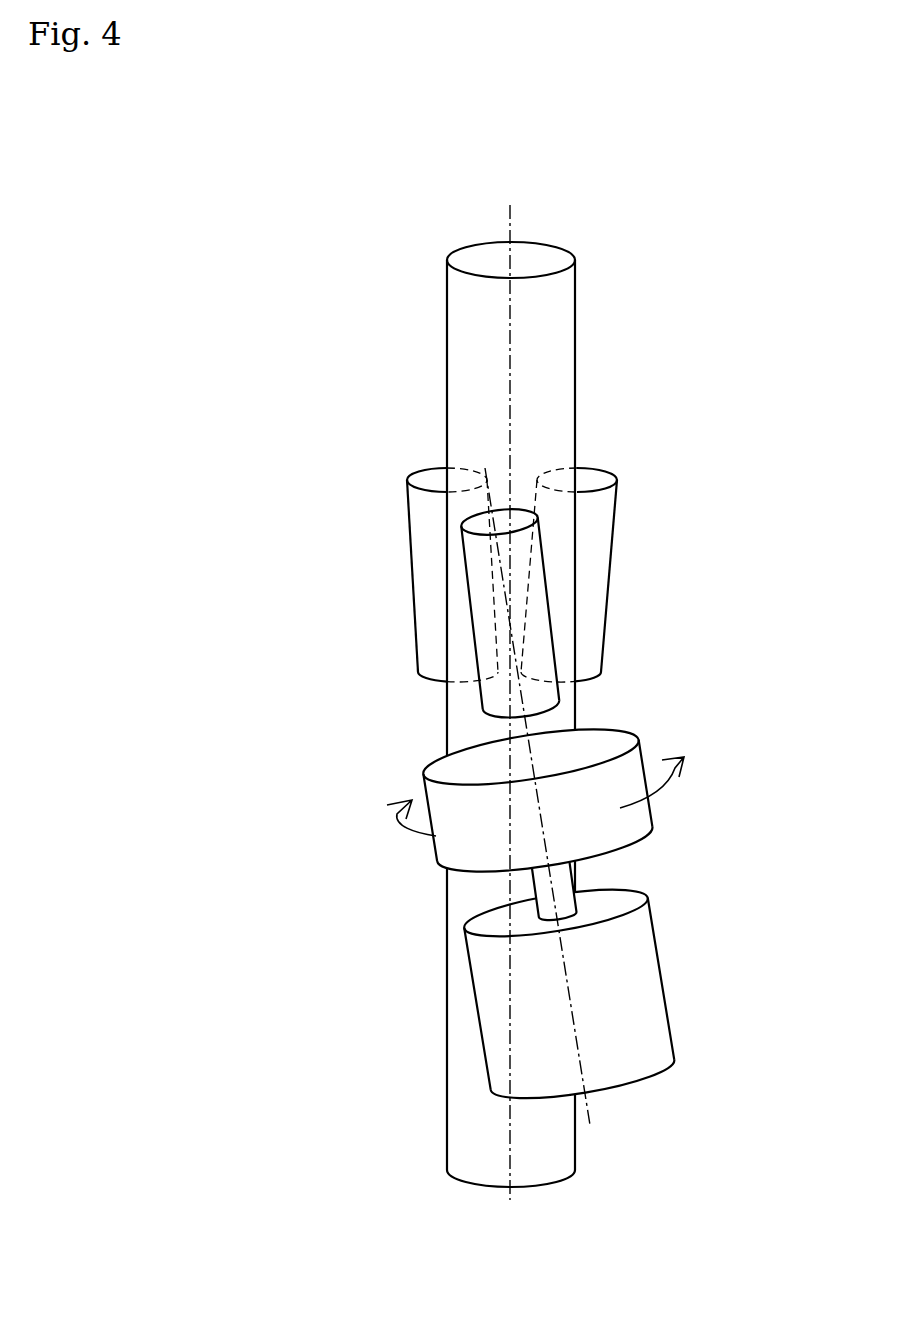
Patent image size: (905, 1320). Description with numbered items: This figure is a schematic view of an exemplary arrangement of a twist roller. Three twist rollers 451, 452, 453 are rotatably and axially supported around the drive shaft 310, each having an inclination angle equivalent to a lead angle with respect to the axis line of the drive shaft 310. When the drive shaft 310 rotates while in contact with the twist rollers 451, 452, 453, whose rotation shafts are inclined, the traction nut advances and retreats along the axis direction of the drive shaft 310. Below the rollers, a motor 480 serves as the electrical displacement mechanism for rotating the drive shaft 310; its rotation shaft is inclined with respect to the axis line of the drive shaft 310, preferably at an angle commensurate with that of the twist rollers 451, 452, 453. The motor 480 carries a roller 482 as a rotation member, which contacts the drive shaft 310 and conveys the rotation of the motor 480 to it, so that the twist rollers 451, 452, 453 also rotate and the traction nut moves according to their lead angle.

The drive shaft 310 is at (552, 303).
The twist roller 451 is at (537, 617).
The twist roller 452 is at (425, 530).
The twist roller 453 is at (600, 530).
The motor 480 is at (637, 993).
The roller 482 is at (628, 820).